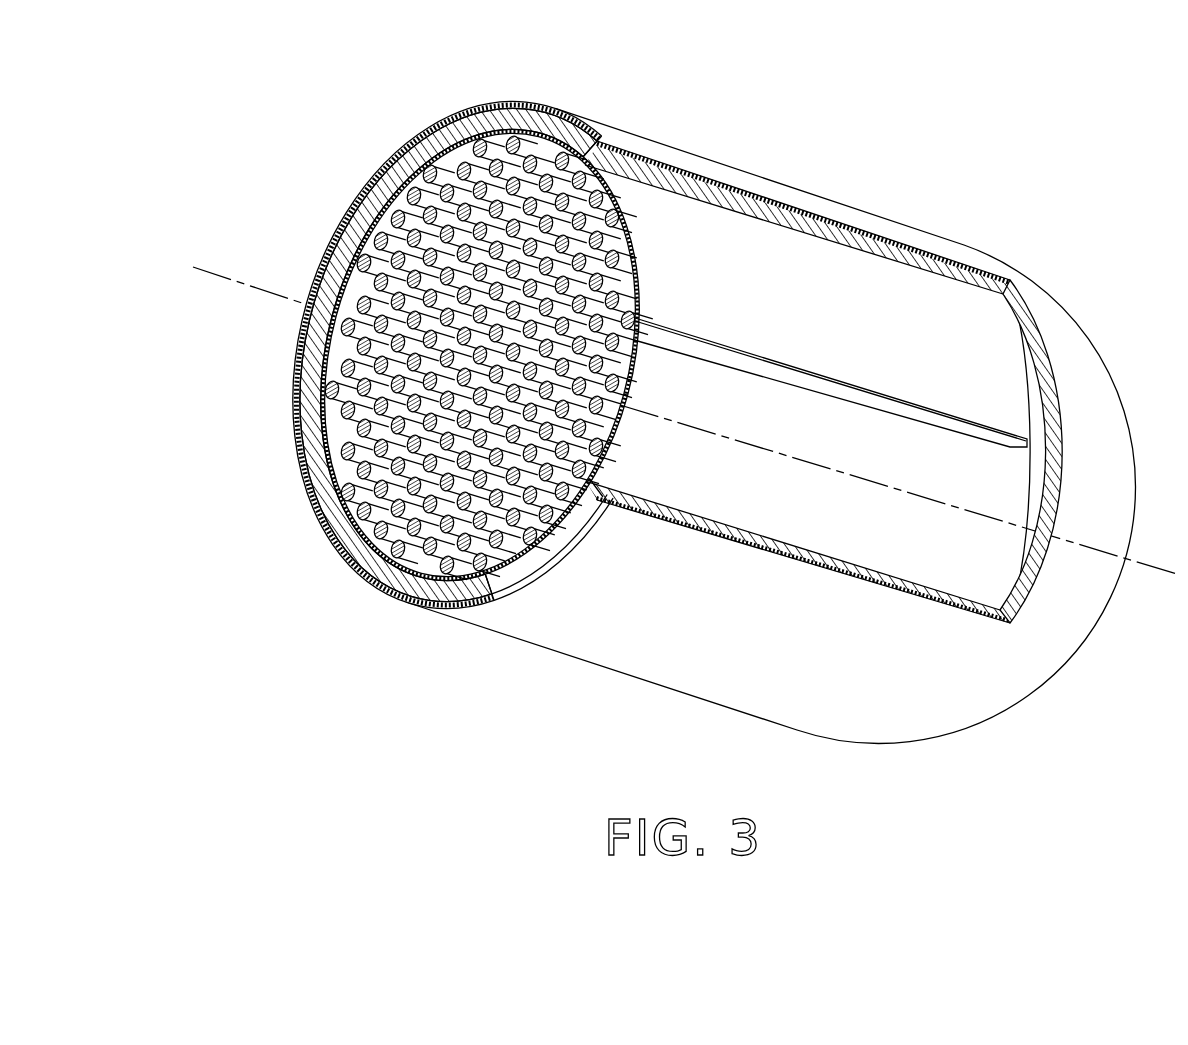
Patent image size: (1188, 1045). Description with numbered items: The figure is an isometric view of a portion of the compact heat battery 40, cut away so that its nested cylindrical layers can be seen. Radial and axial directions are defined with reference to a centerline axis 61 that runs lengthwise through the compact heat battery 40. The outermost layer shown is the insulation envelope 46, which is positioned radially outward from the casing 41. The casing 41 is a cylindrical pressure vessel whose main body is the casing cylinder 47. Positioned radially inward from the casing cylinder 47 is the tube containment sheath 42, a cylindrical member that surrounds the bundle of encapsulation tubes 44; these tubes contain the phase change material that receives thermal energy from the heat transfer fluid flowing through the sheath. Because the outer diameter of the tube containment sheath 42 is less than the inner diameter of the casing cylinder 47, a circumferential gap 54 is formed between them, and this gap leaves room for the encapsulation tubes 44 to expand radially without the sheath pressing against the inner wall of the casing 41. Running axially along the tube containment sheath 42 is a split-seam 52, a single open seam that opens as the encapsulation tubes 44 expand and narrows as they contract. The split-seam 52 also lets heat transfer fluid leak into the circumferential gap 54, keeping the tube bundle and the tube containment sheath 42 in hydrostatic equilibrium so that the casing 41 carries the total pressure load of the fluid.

The compact heat battery 40 is at (278, 196).
The casing 41 is at (443, 123).
The tube containment sheath 42 is at (836, 311).
The encapsulation tubes 44 is at (328, 432).
The insulation envelope 46 is at (550, 96).
The casing cylinder 47 is at (905, 262).
The split-seam 52 is at (889, 409).
The circumferential gap 54 is at (482, 142).
The centerline axis 61 is at (265, 290).